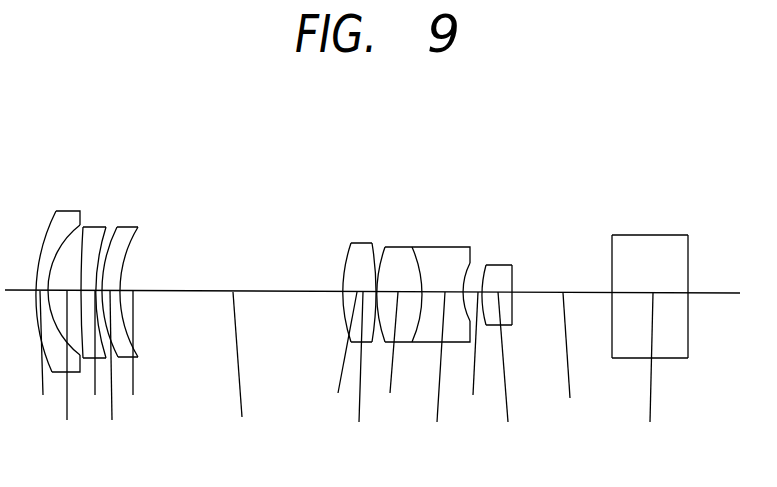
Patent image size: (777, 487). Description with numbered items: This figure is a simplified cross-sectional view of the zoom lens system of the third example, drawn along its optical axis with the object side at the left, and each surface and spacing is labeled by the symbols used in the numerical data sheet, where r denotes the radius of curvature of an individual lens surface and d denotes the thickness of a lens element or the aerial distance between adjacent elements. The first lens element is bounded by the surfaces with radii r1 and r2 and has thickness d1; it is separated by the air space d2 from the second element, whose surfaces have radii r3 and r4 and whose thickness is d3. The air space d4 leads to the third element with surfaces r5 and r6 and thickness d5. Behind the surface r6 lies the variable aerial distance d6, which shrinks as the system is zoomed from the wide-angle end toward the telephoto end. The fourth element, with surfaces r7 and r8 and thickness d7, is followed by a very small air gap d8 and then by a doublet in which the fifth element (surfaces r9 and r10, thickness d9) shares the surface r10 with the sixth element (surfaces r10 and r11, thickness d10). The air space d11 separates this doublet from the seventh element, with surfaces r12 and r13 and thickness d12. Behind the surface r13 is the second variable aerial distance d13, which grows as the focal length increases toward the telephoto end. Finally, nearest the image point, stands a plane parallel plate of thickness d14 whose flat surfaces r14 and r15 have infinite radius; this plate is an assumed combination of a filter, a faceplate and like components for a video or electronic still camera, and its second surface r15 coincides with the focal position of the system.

The radius of curvature of first lens surface r1 is at (53, 212).
The radius of curvature of second lens surface r2 is at (77, 258).
The radius of curvature of third lens surface r3 is at (86, 225).
The radius of curvature of fourth lens surface r4 is at (108, 227).
The radius of curvature of fifth lens surface r5 is at (120, 227).
The radius of curvature of sixth lens surface r6 is at (140, 227).
The radius of curvature of seventh lens surface r7 is at (348, 245).
The radius of curvature of eighth lens surface r8 is at (377, 247).
The radius of curvature of ninth lens surface r9 is at (383, 247).
The radius of curvature of tenth lens surface r10 is at (420, 247).
The radius of curvature of eleventh lens surface r11 is at (480, 247).
The radius of curvature of twelfth lens surface r12 is at (487, 263).
The radius of curvature of thirteenth lens surface r13 is at (513, 265).
The radius of curvature of fourteenth surface r14 is at (612, 235).
The radius of curvature of fifteenth surface r15 is at (688, 235).
The thickness of first lens element d1 is at (46, 359).
The aerial distance between first and second lens elements d2 is at (64, 372).
The thickness of second lens element d3 is at (96, 359).
The aerial distance between second and third lens elements d4 is at (111, 372).
The thickness of third lens element d5 is at (136, 359).
The variable aerial distance between third and fourth lens elements d6 is at (240, 373).
The thickness of fourth lens element d7 is at (342, 360).
The aerial distance between fourth and fifth lens elements d8 is at (358, 372).
The thickness of fifth lens element d9 is at (389, 360).
The thickness of sixth lens element d10 is at (433, 372).
The aerial distance between sixth and seventh lens elements d11 is at (473, 360).
The thickness of seventh lens element d12 is at (506, 372).
The variable aerial distance between seventh lens element and plane parallel plate d13 is at (568, 361).
The thickness of plane parallel plate d14 is at (653, 375).